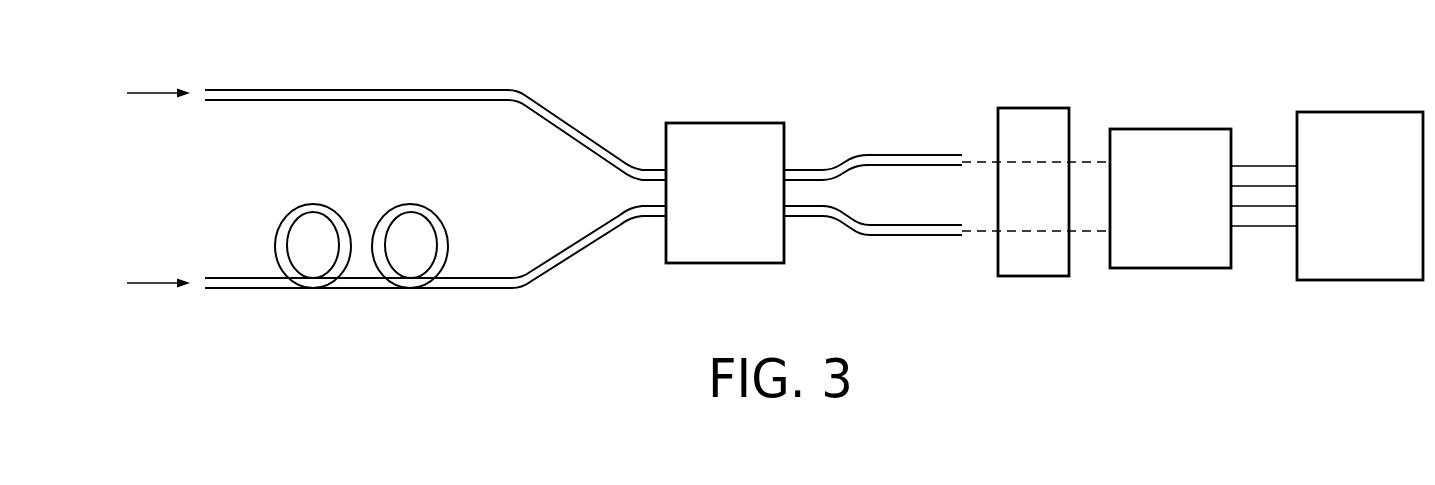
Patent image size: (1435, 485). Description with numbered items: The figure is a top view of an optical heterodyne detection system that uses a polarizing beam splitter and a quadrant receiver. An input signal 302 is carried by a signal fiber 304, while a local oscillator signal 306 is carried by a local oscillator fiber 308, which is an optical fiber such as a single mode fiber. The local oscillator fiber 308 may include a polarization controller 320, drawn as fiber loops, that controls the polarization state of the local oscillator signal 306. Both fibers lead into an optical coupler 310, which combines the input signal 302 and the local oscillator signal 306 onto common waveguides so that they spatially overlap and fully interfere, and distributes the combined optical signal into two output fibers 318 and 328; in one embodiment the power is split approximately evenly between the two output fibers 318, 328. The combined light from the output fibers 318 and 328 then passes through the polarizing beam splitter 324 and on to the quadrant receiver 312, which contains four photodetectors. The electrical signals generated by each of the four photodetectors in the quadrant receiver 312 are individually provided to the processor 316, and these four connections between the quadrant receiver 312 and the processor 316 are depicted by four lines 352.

The input signal 302 is at (307, 74).
The signal fiber 304 is at (523, 93).
The local oscillator signal 306 is at (220, 360).
The local oscillator fiber 308 is at (518, 290).
The optical coupler 310 is at (727, 123).
The quadrant receiver 312 is at (1172, 129).
The processor 316 is at (1365, 112).
The output fiber 318 is at (887, 153).
The polarization controller 320 is at (358, 192).
The polarizing beam splitter 324 is at (1047, 108).
The output fiber 328 is at (887, 238).
The lines 352 is at (1260, 164).